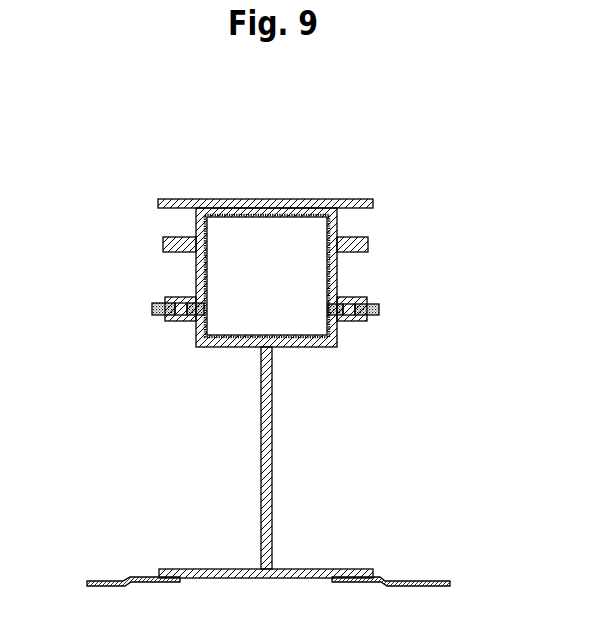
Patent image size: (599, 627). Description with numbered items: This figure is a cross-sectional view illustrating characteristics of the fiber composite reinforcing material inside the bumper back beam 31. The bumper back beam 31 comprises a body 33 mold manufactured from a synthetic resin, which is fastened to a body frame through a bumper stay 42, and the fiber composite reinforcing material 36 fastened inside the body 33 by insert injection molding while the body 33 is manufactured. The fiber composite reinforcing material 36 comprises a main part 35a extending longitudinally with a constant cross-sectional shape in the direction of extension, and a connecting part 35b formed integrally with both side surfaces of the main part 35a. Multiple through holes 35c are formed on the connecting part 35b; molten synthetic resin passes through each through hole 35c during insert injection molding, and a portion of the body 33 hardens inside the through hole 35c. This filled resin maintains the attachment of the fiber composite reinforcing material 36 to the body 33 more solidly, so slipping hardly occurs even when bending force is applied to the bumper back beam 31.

The bumper back beam 31 is at (179, 174).
The body 33 is at (347, 203).
The main part 35a is at (321, 261).
The connecting part 35b is at (380, 309).
The through hole 35c is at (360, 322).
The fiber composite reinforcing material 36 is at (449, 273).
The bumper stay 42 is at (417, 580).